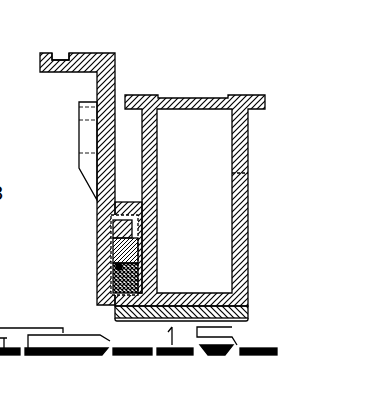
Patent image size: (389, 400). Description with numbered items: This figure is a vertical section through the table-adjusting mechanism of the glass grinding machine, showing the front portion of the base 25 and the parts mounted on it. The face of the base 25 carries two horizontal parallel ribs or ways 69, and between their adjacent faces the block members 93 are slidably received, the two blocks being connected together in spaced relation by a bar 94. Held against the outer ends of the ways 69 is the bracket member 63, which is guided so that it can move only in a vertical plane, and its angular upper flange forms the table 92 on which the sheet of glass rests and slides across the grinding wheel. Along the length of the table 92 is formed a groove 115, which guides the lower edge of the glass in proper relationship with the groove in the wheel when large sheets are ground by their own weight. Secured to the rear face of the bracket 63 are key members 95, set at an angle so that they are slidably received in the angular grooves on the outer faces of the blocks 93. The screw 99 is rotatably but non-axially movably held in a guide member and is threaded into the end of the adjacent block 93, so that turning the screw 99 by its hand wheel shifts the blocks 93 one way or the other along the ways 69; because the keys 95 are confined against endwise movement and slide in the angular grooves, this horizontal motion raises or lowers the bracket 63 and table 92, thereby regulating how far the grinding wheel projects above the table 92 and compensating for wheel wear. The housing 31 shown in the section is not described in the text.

The groove 115 is at (57, 56).
The angular upper flange (table) 92 is at (77, 74).
The bracket member 63 is at (100, 133).
The housing 31 is at (242, 94).
The ribs or ways 69 is at (133, 200).
The key members 95 is at (117, 231).
The block members 93 is at (130, 251).
The screw 99 is at (116, 268).
The bar 94 is at (137, 280).
The base 25 is at (250, 317).